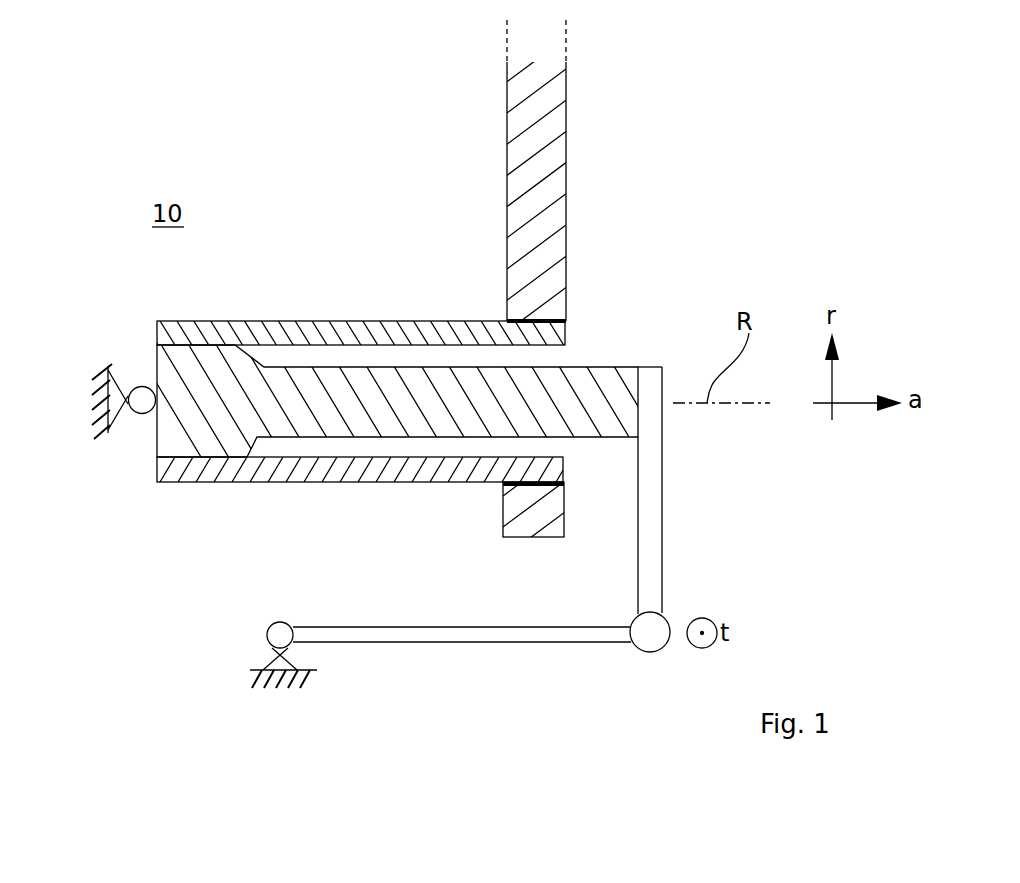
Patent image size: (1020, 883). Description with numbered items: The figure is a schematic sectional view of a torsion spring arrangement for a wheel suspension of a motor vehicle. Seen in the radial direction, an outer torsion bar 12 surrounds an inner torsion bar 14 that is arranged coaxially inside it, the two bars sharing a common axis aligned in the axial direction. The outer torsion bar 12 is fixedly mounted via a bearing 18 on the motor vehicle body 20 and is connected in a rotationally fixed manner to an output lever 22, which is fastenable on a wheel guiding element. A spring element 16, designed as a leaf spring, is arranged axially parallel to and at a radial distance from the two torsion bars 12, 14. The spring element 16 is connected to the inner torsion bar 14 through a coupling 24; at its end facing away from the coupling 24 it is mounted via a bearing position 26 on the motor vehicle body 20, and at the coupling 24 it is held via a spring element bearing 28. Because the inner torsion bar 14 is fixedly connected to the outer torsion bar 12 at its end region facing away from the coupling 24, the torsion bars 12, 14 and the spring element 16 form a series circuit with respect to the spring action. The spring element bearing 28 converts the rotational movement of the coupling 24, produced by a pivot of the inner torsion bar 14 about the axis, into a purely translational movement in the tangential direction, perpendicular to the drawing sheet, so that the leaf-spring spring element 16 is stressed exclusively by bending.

The outer torsion bar 12 is at (297, 328).
The inner torsion bar 14 is at (395, 367).
The spring element 16 is at (440, 645).
The bearing 18 is at (131, 437).
The motor vehicle body 20 is at (88, 377).
The output lever 22 is at (567, 144).
The coupling 24 is at (657, 490).
The bearing position 26 is at (240, 641).
The spring element bearing 28 is at (640, 680).